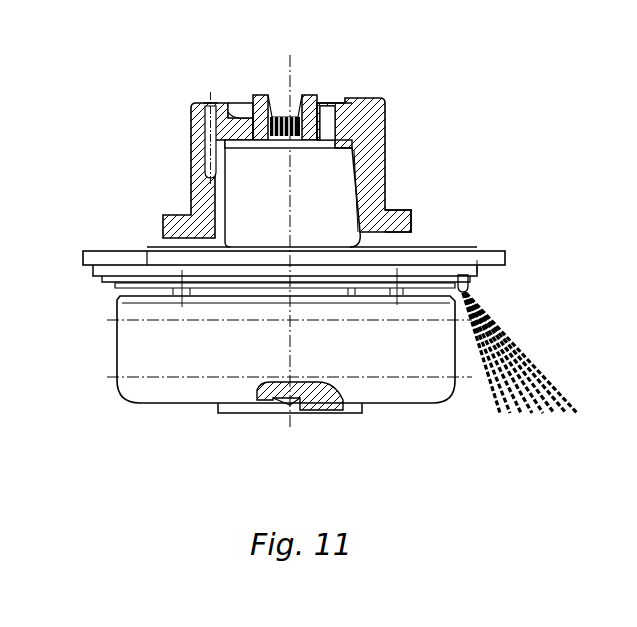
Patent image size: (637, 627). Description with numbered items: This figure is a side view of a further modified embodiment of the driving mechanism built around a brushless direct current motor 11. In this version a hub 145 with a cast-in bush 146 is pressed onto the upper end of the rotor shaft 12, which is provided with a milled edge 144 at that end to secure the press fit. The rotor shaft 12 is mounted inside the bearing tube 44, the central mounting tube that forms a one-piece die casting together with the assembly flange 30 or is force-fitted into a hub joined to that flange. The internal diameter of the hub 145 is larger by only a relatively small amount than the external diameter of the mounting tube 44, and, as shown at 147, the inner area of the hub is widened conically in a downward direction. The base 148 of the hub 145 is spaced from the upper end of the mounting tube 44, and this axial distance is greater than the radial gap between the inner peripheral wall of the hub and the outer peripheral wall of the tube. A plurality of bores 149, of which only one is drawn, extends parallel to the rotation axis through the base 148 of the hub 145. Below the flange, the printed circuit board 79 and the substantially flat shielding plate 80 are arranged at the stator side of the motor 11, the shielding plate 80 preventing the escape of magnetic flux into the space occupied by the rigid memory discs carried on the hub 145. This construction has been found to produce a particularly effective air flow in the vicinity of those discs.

The brushless direct current motor 11 is at (137, 360).
The rotor shaft 12 is at (288, 102).
The assembly flange 30 is at (425, 258).
The bearing tube 44 is at (242, 207).
The printed circuit board 79 is at (470, 280).
The shielding plate 80 is at (118, 288).
The milled edge 144 is at (306, 100).
The hub 145 is at (367, 155).
The cast-in bush 146 is at (252, 103).
The conically widened inner area 147 is at (367, 198).
The base 148 is at (205, 148).
The bores 149 is at (343, 100).